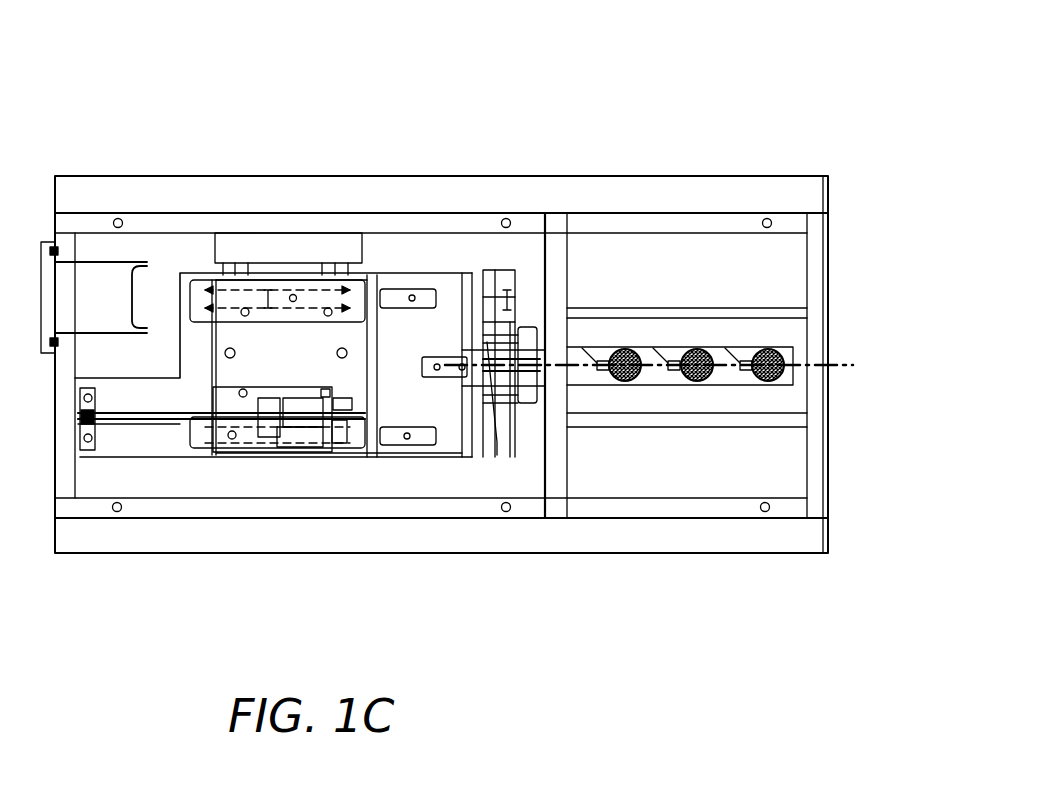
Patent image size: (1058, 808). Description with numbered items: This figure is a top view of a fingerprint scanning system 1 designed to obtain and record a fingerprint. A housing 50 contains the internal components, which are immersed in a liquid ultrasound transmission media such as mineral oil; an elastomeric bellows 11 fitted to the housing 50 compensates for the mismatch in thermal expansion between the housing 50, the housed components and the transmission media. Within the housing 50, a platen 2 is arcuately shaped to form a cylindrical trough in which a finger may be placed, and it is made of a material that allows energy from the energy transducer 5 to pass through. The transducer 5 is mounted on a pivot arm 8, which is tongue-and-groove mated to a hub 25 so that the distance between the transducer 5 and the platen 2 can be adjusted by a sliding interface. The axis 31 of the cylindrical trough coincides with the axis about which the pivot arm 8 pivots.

The housing 50 is at (243, 177).
The system 1 is at (776, 22).
The elastomeric bellows 11 is at (107, 304).
The hub 25 is at (510, 408).
The platen 2 is at (735, 333).
The pivot arm 8 is at (643, 347).
The energy transducer 5 is at (783, 350).
The axis 31 is at (843, 373).